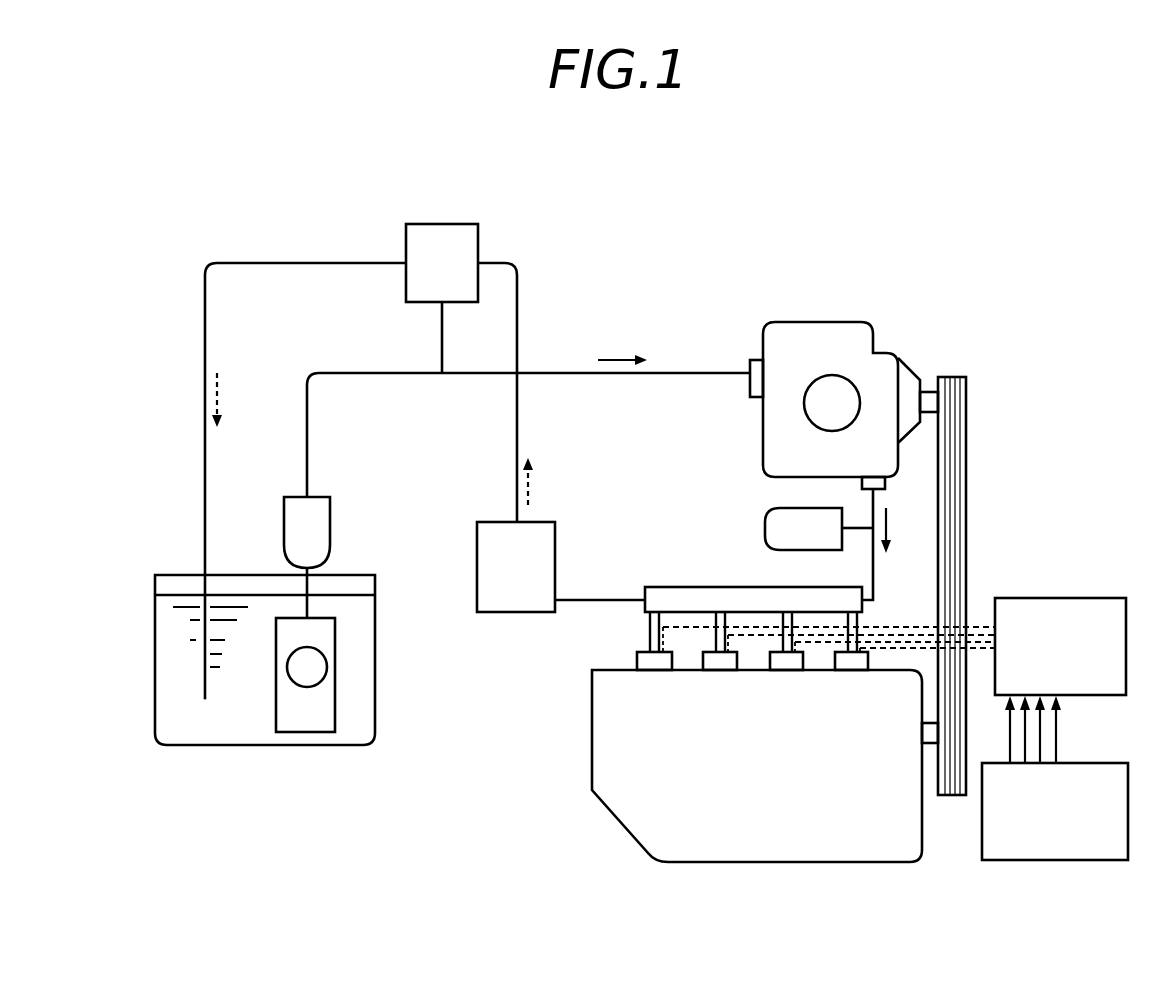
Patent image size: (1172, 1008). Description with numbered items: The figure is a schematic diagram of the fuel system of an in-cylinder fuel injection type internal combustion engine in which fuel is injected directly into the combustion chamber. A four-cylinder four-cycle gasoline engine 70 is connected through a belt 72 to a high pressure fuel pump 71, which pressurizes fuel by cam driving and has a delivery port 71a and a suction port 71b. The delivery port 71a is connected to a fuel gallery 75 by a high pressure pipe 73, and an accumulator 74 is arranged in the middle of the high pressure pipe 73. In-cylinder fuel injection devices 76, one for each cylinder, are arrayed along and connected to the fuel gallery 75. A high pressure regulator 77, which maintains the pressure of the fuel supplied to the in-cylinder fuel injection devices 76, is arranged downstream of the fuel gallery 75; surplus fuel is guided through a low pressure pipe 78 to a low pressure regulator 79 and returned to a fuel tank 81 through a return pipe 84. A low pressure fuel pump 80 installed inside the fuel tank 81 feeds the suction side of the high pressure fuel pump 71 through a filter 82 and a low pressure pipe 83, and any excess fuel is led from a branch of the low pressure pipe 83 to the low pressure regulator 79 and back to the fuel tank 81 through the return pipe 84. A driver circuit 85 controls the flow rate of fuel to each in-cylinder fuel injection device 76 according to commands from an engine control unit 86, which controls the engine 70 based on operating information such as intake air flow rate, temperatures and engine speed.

The four-cylinder four-cycle gasoline engine 70 is at (662, 848).
The high pressure fuel pump 71 is at (805, 322).
The delivery port 71a is at (886, 490).
The suction port 71b is at (750, 383).
The belt 72 is at (966, 457).
The high pressure pipe 73 is at (873, 598).
The accumulator 74 is at (765, 528).
The fuel gallery 75 is at (655, 595).
The in-cylinder fuel injection devices 76 is at (657, 665).
The high pressure regulator 77 is at (477, 553).
The low pressure pipe 78 is at (517, 452).
The low pressure regulator 79 is at (478, 245).
The low pressure fuel pump 80 is at (317, 720).
The fuel tank 81 is at (202, 733).
The filter 82 is at (300, 494).
The low pressure pipe 83 is at (380, 373).
The return pipe 84 is at (205, 334).
The driver circuit 85 is at (1055, 598).
The engine control unit 86 is at (982, 840).